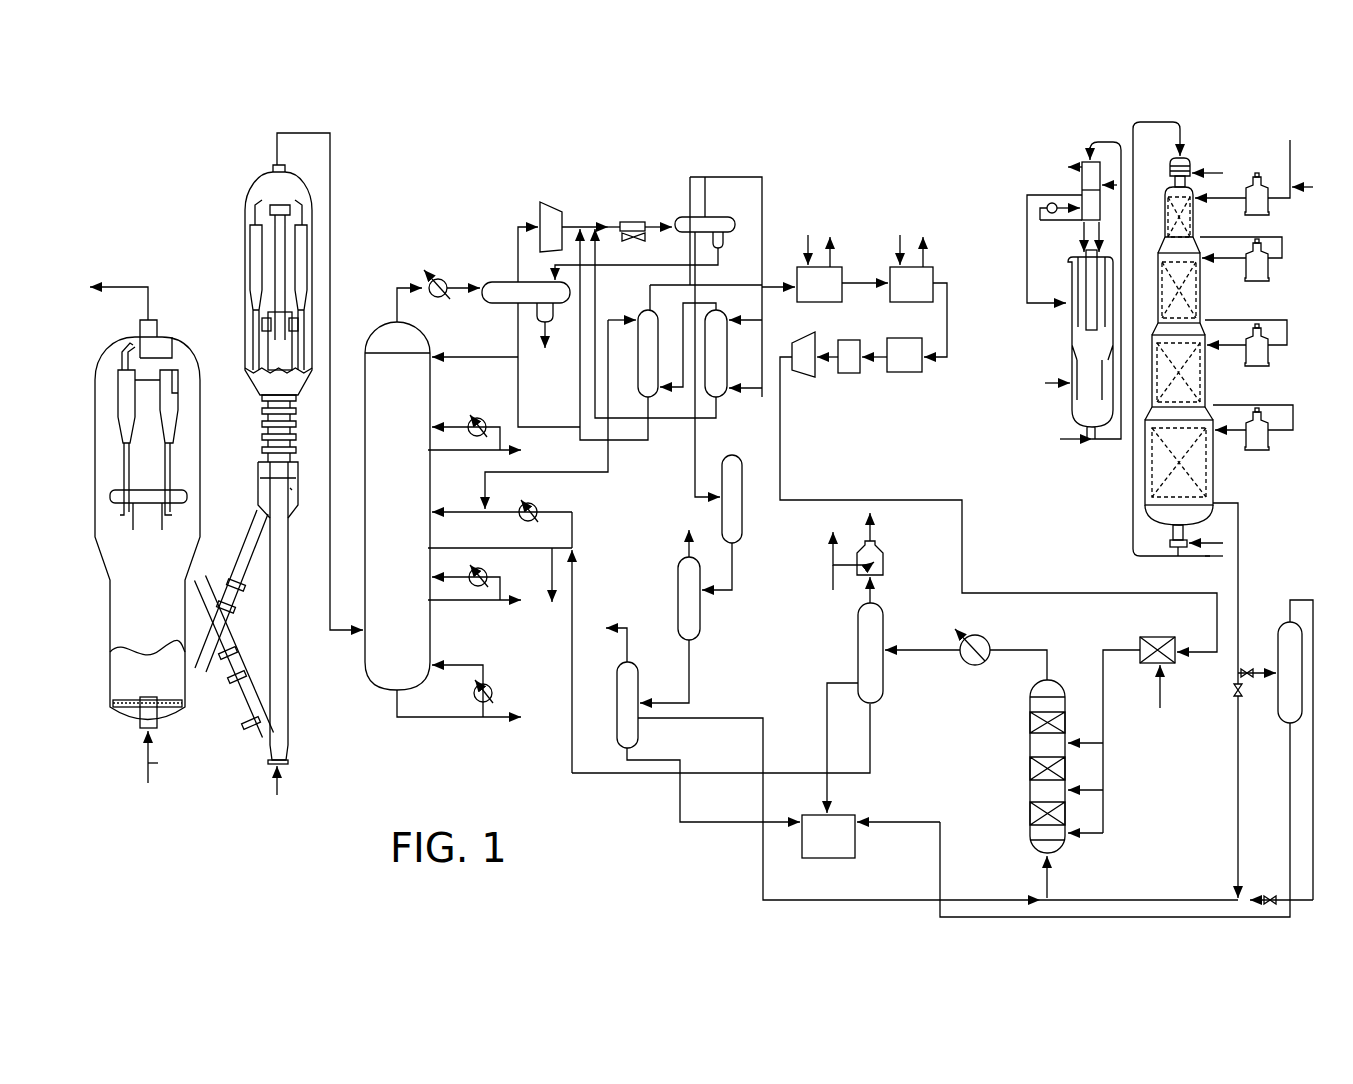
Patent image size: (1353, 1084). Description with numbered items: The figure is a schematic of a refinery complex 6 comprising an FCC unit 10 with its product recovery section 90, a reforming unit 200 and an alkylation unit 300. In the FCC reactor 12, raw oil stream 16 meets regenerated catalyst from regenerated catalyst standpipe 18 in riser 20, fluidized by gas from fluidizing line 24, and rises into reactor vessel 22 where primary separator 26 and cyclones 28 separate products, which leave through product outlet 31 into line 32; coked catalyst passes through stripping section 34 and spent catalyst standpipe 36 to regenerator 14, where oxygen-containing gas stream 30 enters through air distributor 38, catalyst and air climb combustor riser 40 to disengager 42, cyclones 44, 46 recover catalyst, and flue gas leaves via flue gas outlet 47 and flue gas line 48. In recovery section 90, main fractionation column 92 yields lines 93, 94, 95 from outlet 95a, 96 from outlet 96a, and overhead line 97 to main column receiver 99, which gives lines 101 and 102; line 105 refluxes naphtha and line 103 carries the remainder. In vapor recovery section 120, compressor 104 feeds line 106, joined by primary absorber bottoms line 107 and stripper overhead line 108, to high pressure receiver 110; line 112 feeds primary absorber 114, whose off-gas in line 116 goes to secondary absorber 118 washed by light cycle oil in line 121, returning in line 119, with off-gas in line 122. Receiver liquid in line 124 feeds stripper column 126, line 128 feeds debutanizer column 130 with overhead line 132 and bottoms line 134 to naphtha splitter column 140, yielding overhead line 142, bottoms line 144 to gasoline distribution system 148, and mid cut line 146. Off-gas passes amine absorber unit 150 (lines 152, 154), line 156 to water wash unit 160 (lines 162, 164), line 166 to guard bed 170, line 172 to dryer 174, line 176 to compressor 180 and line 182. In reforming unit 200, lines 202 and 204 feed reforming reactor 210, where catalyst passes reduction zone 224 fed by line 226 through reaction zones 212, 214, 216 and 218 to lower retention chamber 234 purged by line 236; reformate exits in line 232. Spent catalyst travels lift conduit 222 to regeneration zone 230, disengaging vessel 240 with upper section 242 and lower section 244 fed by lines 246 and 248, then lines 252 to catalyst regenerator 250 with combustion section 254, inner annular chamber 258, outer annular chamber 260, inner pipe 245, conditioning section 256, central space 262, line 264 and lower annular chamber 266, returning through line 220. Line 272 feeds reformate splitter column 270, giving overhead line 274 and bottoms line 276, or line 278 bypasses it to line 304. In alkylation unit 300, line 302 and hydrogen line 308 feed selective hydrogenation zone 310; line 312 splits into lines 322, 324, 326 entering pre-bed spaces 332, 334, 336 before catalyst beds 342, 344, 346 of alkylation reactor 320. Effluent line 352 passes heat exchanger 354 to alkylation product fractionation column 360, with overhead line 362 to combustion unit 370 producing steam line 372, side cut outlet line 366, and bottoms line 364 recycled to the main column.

The refinery complex 6 is at (868, 178).
The FCC unit 10 is at (122, 193).
The FCC reactor 12 is at (248, 193).
The catalyst regenerator 14 is at (88, 340).
The raw oil stream 16 is at (292, 666).
The regenerated catalyst standpipe 18 is at (243, 698).
The riser 20 is at (270, 585).
The reactor vessel 22 is at (243, 330).
The fluidizing line 24 is at (275, 793).
The primary separator 26 is at (262, 330).
The cyclones 28 is at (255, 240).
The oxygen-containing gas stream 30 is at (173, 757).
The product outlet 31 is at (271, 170).
The line 32 is at (325, 132).
The stripping section 34 is at (298, 447).
The spent catalyst standpipe 36 is at (250, 532).
The air distributor 38 is at (137, 703).
The combustor riser 40 is at (138, 520).
The disengager 42 is at (113, 492).
The first stage separator cyclone 44 is at (180, 400).
The second stage separator cyclone 46 is at (125, 400).
The flue gas outlet 47 is at (138, 328).
The flue gas line 48 is at (113, 285).
The product recovery section 90 is at (470, 185).
The main fractionation column 92 is at (365, 405).
The line 93 is at (473, 712).
The line 94 is at (498, 607).
The line 95 is at (545, 550).
The light cycle oil outlet 95a is at (430, 552).
The line 96 is at (485, 455).
The heavy naphtha outlet 96a is at (432, 455).
The overhead line 97 is at (386, 312).
The main column receiver 99 is at (508, 282).
The line 101 is at (515, 312).
The line 102 is at (517, 237).
The line 103 is at (521, 390).
The compressor 104 is at (552, 203).
The line 105 is at (497, 358).
The line 106 is at (594, 222).
The primary absorber bottoms line 107 is at (716, 414).
The stripper overhead line 108 is at (578, 400).
The high pressure receiver 110 is at (733, 217).
The line 112 is at (745, 177).
The primary absorber 114 is at (722, 318).
The line 116 is at (650, 393).
The secondary absorber 118 is at (636, 318).
The line 119 is at (650, 455).
The vapor recovery section 120 is at (645, 210).
The line 121 is at (606, 465).
The line 122 is at (648, 290).
The line 124 is at (702, 262).
The stripper column 126 is at (745, 475).
The line 128 is at (735, 588).
The debutanizer column 130 is at (676, 612).
The overhead line 132 is at (685, 545).
The bottoms line 134 is at (690, 658).
The naphtha splitter column 140 is at (615, 702).
The overhead line 142 is at (629, 633).
The bottoms line 144 is at (625, 758).
The line 146 is at (693, 720).
The gasoline distribution system 148 is at (858, 841).
The amine absorber unit 150 is at (832, 302).
The line 152 is at (805, 245).
The line 154 is at (833, 252).
The line 156 is at (858, 280).
The water wash unit 160 is at (905, 302).
The line 162 is at (898, 245).
The line 164 is at (926, 258).
The line 166 is at (947, 285).
The guard bed 170 is at (908, 374).
The line 172 is at (876, 375).
The dryer 174 is at (830, 342).
The line 176 is at (838, 377).
The compressor 180 is at (812, 378).
The line 182 is at (781, 465).
The reforming unit 200 is at (1048, 122).
The line 202 is at (1288, 160).
The line 204 is at (1313, 187).
The reforming reactor 210 is at (1207, 393).
The top reaction zone 212 is at (1185, 217).
The second reaction zone 214 is at (1198, 296).
The third reaction zone 216 is at (1200, 380).
The final reaction zone 218 is at (1205, 472).
The line 220 is at (1160, 122).
The lift conduit 222 is at (1130, 563).
The reduction zone 224 is at (1188, 163).
The line 226 is at (1223, 173).
The regeneration zone 230 is at (1042, 447).
The line 232 is at (1240, 530).
The lower retention chamber 234 is at (1170, 548).
The line 236 is at (1207, 548).
The disengaging vessel 240 is at (1080, 170).
The upper section 242 is at (1090, 147).
The lower section 244 is at (1080, 186).
The inner pipe 245 is at (1090, 312).
The line 246 is at (1075, 230).
The line 248 is at (1027, 243).
The catalyst regenerator 250 is at (1068, 320).
The lines 252 is at (1120, 160).
The combustion section 254 is at (1080, 284).
The conditioning section 256 is at (1108, 447).
The inner annular chamber 258 is at (1085, 350).
The outer annular chamber 260 is at (1085, 330).
The central space 262 is at (1082, 412).
The line 264 is at (1055, 385).
The lower annular chamber 266 is at (1045, 383).
The reformate splitter column 270 is at (1280, 720).
The line 272 is at (1258, 640).
The overhead line 274 is at (1295, 600).
The line 276 is at (1311, 820).
The line 278 is at (1236, 868).
The alkylation unit 300 is at (1033, 574).
The line 302 is at (1205, 655).
The line 304 is at (1155, 898).
The line 308 is at (1163, 685).
The selective hydrogenation zone 310 is at (1140, 663).
The line 312 is at (1120, 650).
The alkylation reactor 320 is at (1030, 712).
The line 322 is at (1100, 745).
The line 324 is at (1100, 792).
The line 326 is at (1100, 835).
The pre-bed space 332 is at (1040, 748).
The pre-bed space 334 is at (1040, 790).
The pre-bed space 336 is at (1035, 836).
The catalyst bed 342 is at (1060, 740).
The catalyst bed 344 is at (1060, 785).
The catalyst bed 346 is at (1060, 835).
The effluent line 352 is at (1035, 650).
The heat exchanger 354 is at (962, 664).
The alkylation product fractionation column 360 is at (856, 641).
The overhead line 362 is at (876, 598).
The line 364 is at (873, 749).
The outlet line 366 is at (822, 688).
The combustion unit 370 is at (886, 566).
The line 372 is at (830, 563).